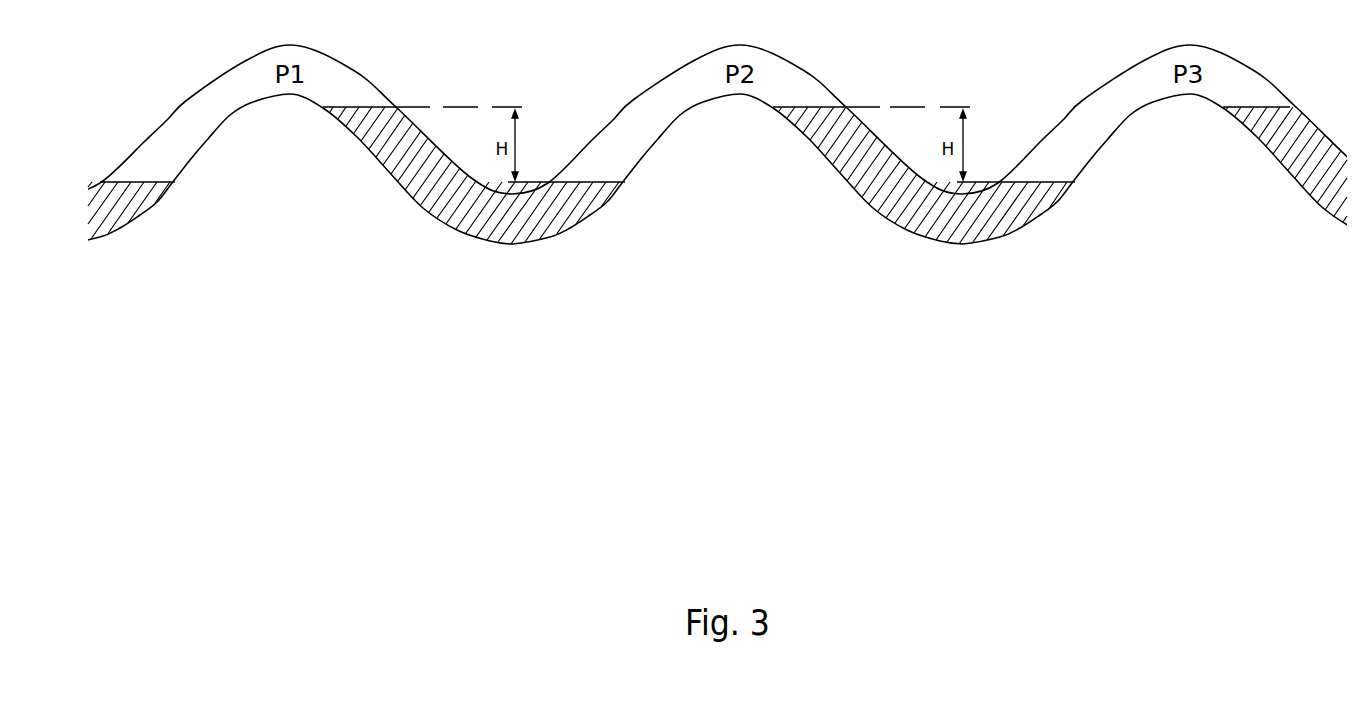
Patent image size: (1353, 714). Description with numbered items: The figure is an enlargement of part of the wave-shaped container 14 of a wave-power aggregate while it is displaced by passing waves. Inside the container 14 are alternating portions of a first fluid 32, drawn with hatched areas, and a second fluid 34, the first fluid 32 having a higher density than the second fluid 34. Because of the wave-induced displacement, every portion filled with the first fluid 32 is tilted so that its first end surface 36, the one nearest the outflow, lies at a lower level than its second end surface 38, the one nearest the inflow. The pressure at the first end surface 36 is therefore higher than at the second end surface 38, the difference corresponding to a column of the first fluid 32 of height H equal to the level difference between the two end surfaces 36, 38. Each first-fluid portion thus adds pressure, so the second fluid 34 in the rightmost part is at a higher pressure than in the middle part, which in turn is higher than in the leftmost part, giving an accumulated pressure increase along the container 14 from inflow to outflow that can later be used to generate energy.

The container 14 is at (618, 117).
The first fluid 32 is at (115, 208).
The second fluid 34 is at (342, 87).
The first end surface 36 is at (138, 183).
The second end surface 38 is at (345, 123).